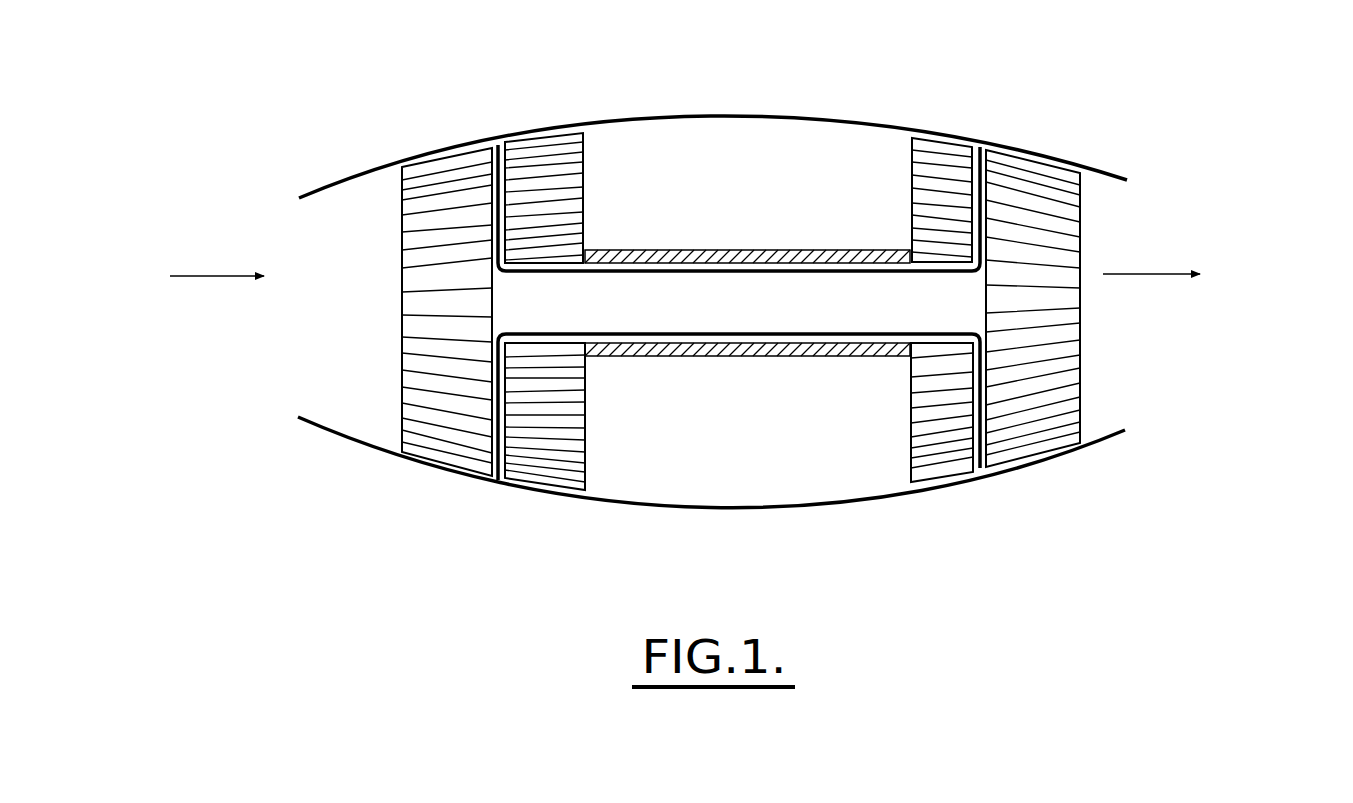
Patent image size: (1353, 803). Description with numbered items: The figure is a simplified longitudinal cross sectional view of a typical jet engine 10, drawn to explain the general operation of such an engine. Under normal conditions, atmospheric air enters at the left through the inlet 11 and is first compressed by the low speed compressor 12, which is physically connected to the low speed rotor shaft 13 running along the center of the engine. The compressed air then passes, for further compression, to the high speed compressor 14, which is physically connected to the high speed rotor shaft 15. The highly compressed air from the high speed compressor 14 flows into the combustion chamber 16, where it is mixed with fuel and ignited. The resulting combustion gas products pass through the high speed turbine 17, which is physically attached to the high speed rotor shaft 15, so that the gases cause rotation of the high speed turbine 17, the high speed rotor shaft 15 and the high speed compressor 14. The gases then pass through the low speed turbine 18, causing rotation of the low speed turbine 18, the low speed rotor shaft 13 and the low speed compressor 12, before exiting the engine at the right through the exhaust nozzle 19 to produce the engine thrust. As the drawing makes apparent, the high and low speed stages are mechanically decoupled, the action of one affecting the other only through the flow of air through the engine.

The jet engine 10 is at (424, 36).
The inlet 11 is at (336, 250).
The low speed compressor 12 is at (432, 160).
The low speed rotor shaft 13 is at (717, 313).
The high speed compressor 14 is at (548, 138).
The high speed rotor shaft 15 is at (852, 250).
The combustion chamber 16 is at (683, 138).
The high speed turbine 17 is at (938, 145).
The low speed turbine 18 is at (1026, 164).
The exhaust nozzle 19 is at (1115, 232).